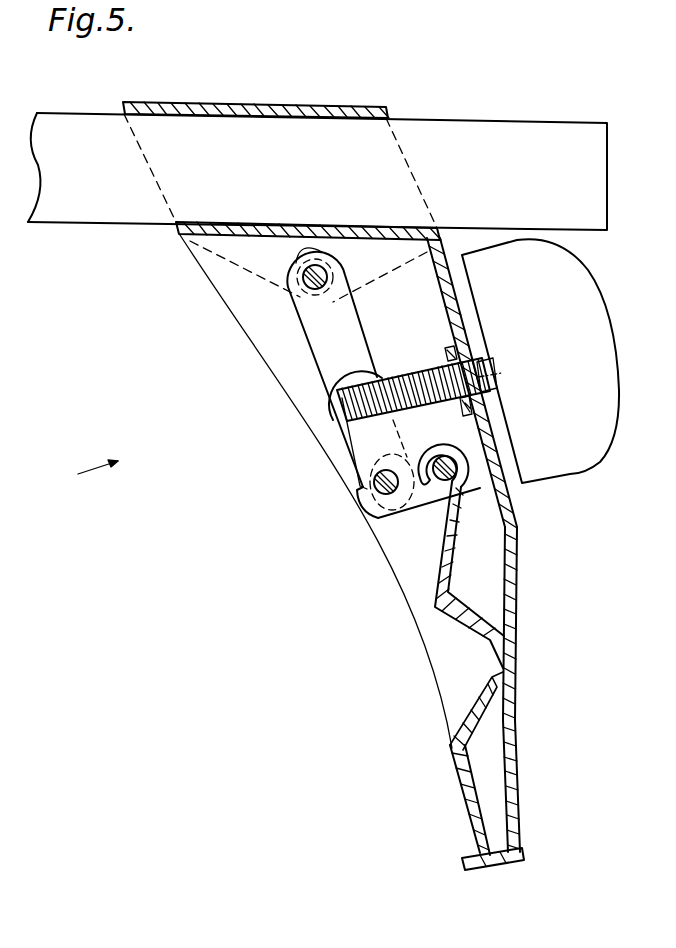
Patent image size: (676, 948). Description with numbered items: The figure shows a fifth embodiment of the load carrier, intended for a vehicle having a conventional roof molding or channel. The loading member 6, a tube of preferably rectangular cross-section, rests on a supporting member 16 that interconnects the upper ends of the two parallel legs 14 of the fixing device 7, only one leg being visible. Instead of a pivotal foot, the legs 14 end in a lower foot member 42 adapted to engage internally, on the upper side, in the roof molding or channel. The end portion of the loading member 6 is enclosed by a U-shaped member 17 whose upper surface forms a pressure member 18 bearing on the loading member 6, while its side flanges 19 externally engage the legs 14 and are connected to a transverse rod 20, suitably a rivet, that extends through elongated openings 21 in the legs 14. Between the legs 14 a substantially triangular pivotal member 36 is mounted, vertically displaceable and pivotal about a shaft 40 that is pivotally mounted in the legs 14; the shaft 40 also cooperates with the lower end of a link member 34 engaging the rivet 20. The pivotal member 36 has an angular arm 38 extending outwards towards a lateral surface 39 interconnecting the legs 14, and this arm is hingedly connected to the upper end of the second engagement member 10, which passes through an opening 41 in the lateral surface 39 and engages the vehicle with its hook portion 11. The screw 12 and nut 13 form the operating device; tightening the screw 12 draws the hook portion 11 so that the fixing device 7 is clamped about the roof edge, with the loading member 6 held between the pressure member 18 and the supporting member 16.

The loading member 6 is at (450, 130).
The fixing device 7 is at (81, 478).
The second engagement member 10 is at (520, 752).
The hook portion 11 is at (490, 866).
The screw 12 is at (345, 421).
The nut 13 is at (452, 345).
The legs 14 is at (422, 300).
The supporting member 16 is at (198, 241).
The U-shaped member 17 is at (153, 130).
The pressure member 18 is at (295, 84).
The side flanges 19 is at (237, 253).
The transverse rod 20 is at (322, 262).
The elongated openings 21 is at (302, 245).
The link member 34 is at (313, 333).
The pivotal member 36 is at (410, 515).
The angular arm 38 is at (477, 480).
The lateral surface 39 is at (508, 506).
The shaft 40 is at (378, 488).
The opening 41 is at (487, 680).
The lower foot member 42 is at (480, 825).